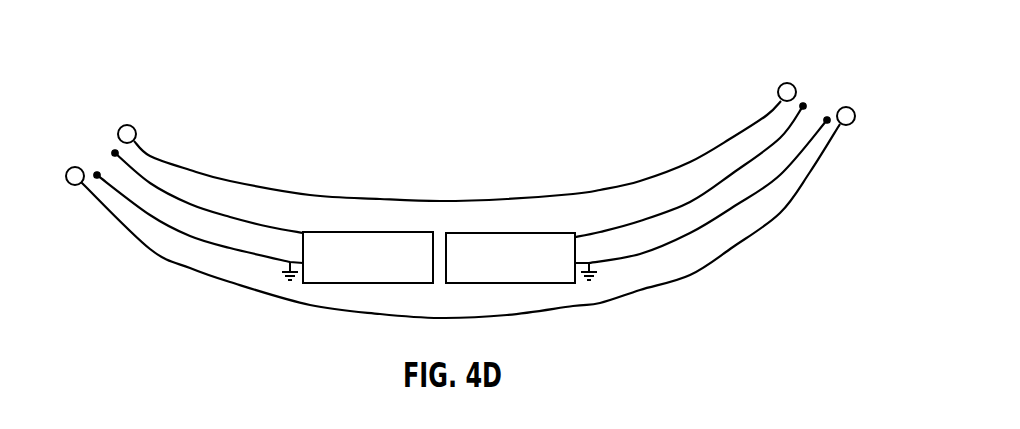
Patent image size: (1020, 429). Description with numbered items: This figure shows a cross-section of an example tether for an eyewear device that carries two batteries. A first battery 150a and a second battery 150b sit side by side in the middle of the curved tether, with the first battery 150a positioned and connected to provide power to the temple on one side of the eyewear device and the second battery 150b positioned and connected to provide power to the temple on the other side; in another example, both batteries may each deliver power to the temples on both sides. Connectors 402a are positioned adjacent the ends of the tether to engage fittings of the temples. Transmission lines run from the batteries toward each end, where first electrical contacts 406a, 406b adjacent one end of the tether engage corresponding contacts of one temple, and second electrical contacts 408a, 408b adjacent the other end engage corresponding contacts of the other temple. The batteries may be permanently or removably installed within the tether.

The first battery 150a is at (378, 231).
The second battery 150b is at (495, 232).
The first connector 402a is at (135, 134).
The first electrical contact 406a is at (115, 153).
The first electrical contact 406b is at (97, 175).
The second electrical contact 408a is at (803, 106).
The second electrical contact 408b is at (827, 120).